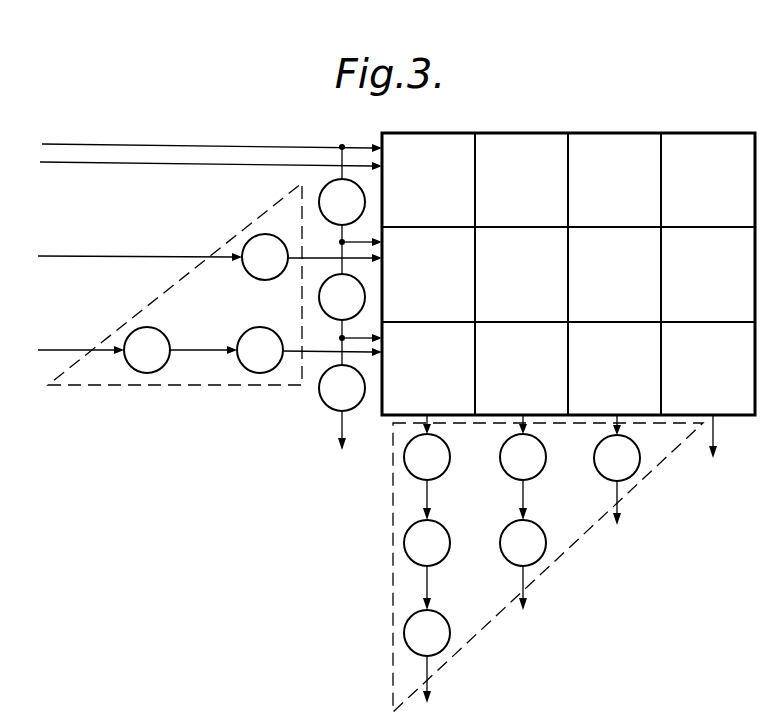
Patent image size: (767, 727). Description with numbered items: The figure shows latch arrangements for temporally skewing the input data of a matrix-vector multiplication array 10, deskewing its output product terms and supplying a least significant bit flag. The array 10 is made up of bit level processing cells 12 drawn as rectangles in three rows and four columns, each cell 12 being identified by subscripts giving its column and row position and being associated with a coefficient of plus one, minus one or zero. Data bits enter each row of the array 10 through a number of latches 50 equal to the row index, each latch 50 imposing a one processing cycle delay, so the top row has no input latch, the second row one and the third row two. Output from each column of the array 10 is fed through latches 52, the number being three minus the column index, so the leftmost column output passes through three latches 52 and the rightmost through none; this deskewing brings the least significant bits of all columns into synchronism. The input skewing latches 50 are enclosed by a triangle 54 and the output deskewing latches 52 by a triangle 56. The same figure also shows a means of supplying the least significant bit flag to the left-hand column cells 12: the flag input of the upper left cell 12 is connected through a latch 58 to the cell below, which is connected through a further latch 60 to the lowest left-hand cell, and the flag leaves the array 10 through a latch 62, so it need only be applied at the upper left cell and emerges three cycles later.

The matrix-vector multiplication array 10 is at (546, 128).
The bit level processing cells 12 is at (575, 273).
The latches 50 is at (258, 236).
The latches 52 is at (408, 463).
The triangle 54 is at (92, 385).
The triangle 56 is at (562, 556).
The latch 58 is at (333, 190).
The latch 60 is at (320, 299).
The latch 62 is at (323, 398).